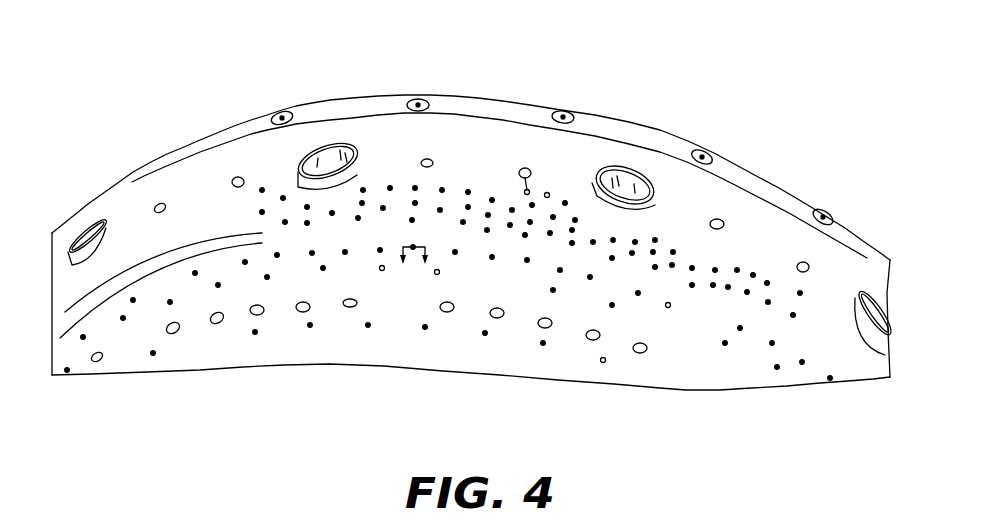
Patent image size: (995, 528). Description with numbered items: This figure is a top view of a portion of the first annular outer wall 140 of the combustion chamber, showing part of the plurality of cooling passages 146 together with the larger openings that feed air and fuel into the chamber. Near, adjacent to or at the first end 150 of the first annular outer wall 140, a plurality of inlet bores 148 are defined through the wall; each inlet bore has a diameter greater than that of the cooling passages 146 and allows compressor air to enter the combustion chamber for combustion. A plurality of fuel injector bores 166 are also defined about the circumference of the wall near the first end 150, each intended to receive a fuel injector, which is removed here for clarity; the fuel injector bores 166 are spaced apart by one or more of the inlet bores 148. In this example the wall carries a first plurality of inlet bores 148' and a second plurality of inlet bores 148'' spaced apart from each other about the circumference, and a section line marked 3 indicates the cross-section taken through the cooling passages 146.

The first annular outer wall 140 is at (483, 80).
The plurality of inlet bores 148 is at (473, 207).
The first plurality of inlet bores 148' is at (537, 170).
The second plurality of inlet bores 148'' is at (340, 298).
The plurality of cooling passages 146 is at (547, 193).
The first end 150 is at (667, 142).
The plurality of fuel injector bores 166 is at (95, 230).
The section line 3- 3 is at (412, 258).